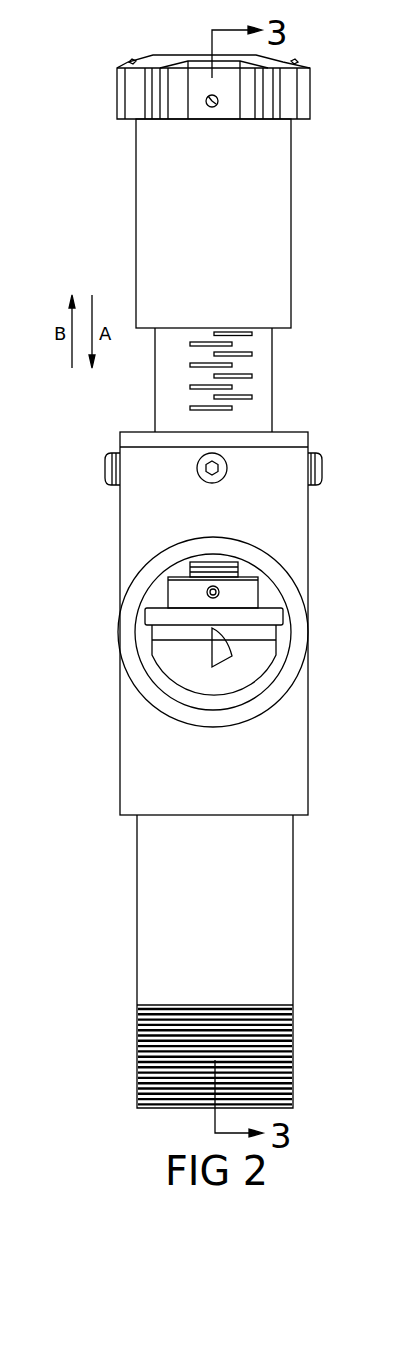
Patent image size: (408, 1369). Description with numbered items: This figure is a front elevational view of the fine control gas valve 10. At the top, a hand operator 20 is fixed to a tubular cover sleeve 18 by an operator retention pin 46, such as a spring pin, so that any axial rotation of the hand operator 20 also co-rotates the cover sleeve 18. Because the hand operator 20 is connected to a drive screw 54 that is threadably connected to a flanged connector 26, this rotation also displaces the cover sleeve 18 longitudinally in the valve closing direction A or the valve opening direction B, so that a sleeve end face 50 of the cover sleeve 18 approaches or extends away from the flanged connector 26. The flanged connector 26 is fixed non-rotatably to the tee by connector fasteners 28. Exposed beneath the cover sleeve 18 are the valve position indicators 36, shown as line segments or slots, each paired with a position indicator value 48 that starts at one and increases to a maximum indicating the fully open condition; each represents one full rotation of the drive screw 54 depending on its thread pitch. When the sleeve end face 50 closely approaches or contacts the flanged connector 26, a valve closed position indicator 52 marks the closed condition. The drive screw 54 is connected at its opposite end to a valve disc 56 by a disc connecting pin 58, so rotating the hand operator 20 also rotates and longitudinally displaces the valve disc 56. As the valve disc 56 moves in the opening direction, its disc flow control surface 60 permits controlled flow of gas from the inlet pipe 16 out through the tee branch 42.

The fine control gas valve 10 is at (95, 172).
The inlet pipe 16 is at (137, 912).
The cover sleeve 18 is at (274, 232).
The hand operator 20 is at (293, 98).
The flanged connector 26 is at (128, 438).
The connector fasteners 28 is at (322, 468).
The valve position indicator 36 is at (252, 376).
The tee branch 42 is at (139, 676).
The operator retention pin 46 is at (206, 100).
The position indicator values 48 is at (245, 412).
The sleeve end face 50 is at (143, 330).
The valve closed position indicator 52 is at (243, 425).
The drive screw 54 is at (238, 568).
The valve disc 56 is at (168, 594).
The disc connecting pin 58 is at (222, 594).
The disc flow control surface 60 is at (182, 683).